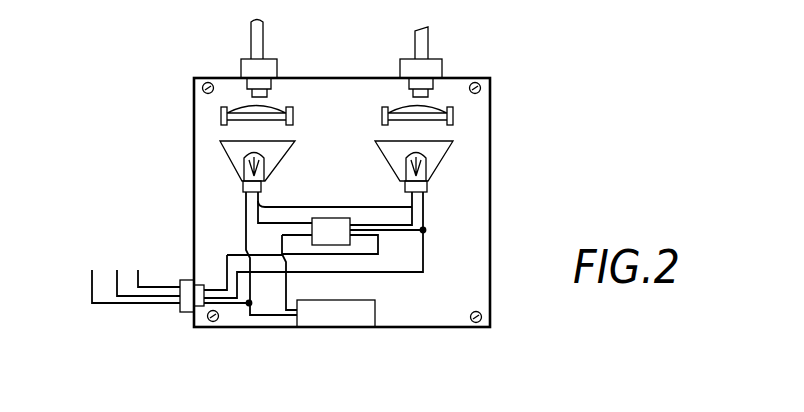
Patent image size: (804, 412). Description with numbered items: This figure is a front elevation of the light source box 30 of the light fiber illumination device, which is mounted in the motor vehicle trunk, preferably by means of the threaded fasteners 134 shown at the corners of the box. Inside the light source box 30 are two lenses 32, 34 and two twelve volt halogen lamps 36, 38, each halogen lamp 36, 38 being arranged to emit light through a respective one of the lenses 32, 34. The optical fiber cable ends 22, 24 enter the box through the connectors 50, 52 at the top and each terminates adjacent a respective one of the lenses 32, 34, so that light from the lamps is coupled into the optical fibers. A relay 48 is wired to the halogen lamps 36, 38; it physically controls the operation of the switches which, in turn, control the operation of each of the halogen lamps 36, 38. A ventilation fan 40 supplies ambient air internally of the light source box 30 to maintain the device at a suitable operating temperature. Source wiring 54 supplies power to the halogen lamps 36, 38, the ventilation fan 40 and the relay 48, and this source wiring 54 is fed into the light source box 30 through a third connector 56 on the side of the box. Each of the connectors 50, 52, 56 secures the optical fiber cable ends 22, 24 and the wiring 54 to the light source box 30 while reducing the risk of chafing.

The optical fiber cable end 22 is at (250, 40).
The optical fiber cable end 24 is at (428, 43).
The light source box 30 is at (648, 132).
The lens 32 is at (221, 108).
The lens 34 is at (454, 108).
The halogen lamp 36 is at (243, 160).
The halogen lamp 38 is at (427, 160).
The ventilation fan 40 is at (333, 316).
The relay 48 is at (338, 237).
The connector 50 is at (281, 67).
The connector 52 is at (400, 67).
The source wiring 54 is at (101, 335).
The third connector 56 is at (187, 280).
The threaded fasteners 134 is at (202, 89).